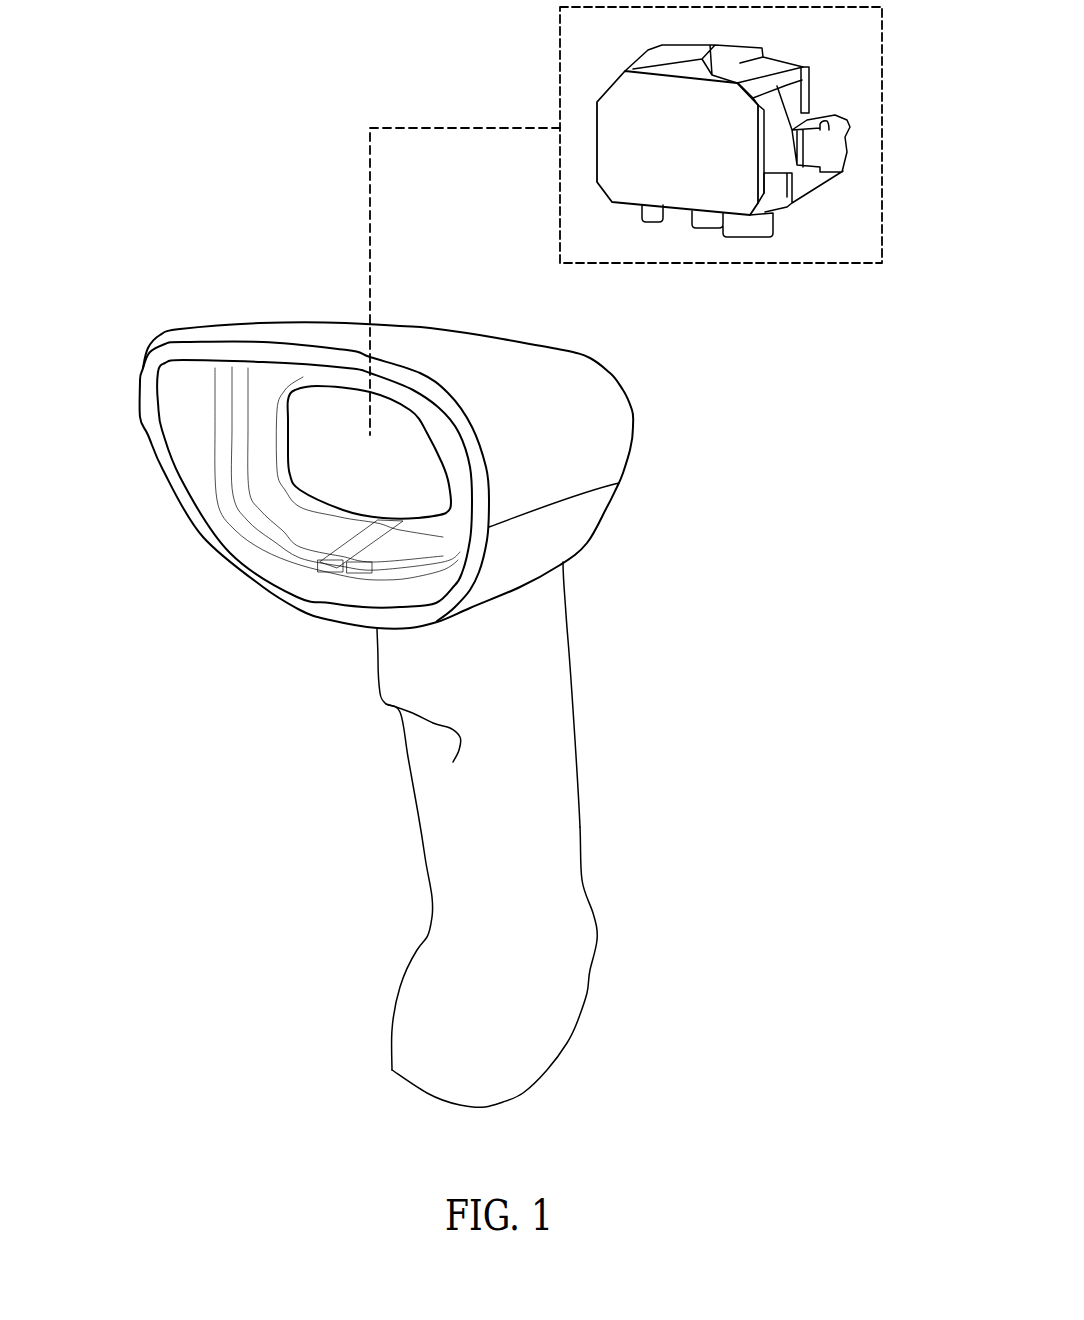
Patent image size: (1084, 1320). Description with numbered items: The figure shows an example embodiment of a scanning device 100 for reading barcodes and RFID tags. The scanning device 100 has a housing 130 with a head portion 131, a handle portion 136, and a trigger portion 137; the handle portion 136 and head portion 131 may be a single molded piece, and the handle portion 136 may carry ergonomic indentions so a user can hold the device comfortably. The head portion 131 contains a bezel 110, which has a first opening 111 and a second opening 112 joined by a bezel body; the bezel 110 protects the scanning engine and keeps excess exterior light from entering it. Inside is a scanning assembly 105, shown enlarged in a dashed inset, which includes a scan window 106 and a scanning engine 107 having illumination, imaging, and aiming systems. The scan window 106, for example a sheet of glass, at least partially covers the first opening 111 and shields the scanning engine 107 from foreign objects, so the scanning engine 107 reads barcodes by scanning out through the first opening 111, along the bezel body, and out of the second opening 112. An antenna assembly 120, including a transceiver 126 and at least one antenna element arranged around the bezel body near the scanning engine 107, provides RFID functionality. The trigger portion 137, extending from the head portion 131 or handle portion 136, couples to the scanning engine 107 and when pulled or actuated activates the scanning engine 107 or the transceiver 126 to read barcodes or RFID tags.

The scanning device 100 is at (130, 352).
The bezel 110 is at (160, 415).
The second opening 112 is at (182, 362).
The first opening 111 is at (317, 385).
The antenna assembly 120 is at (275, 523).
The head portion 131 is at (563, 470).
The housing 130 is at (608, 710).
The handle portion 136 is at (552, 853).
The trigger portion 137 is at (403, 702).
The scanning assembly 105 is at (677, 223).
The scan window 106 is at (733, 188).
The scanning engine 107 is at (805, 172).
The transceiver 126 is at (809, 82).